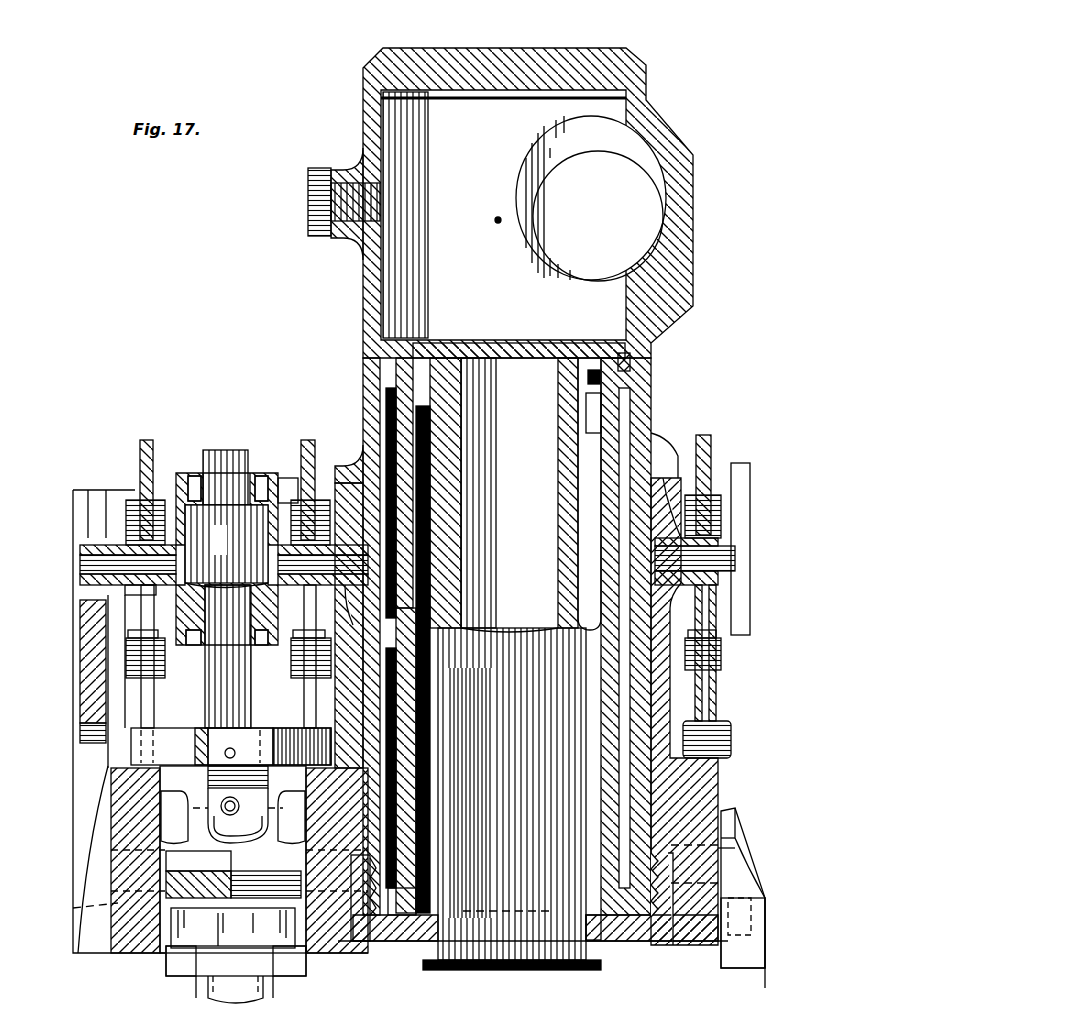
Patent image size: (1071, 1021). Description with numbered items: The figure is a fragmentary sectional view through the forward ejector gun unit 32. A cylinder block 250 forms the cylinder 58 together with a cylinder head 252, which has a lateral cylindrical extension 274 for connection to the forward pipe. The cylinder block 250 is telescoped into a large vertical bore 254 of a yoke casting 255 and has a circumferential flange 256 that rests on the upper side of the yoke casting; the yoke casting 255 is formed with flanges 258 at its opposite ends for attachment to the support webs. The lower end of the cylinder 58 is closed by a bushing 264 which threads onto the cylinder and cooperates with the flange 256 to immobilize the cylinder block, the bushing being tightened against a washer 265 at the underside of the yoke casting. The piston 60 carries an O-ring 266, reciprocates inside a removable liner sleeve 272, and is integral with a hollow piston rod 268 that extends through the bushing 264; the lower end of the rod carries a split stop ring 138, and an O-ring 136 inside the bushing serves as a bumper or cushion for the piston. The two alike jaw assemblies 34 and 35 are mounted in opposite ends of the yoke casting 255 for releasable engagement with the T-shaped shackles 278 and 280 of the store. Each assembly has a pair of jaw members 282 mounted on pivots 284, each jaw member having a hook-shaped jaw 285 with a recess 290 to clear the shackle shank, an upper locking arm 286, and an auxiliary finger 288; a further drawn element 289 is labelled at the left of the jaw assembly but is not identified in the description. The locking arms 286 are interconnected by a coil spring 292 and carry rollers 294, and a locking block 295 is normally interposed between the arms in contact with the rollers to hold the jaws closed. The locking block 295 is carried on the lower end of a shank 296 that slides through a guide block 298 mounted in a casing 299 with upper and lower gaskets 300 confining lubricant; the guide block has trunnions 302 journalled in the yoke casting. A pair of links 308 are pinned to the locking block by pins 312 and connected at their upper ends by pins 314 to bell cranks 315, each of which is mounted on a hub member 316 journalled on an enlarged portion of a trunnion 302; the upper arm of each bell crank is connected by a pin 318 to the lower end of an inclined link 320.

The forward ejector gun unit 32 is at (550, 48).
The forward jaw assembly 34 is at (158, 965).
The forward jaw assembly 35 is at (713, 958).
The cylinder 58 is at (358, 338).
The piston 60 is at (565, 338).
The O-ring 136 is at (595, 935).
The split stop ring 138 is at (560, 950).
The cylinder block 250 is at (352, 306).
The cylinder head 252 is at (432, 60).
The vertical bore 254 is at (650, 777).
The yoke casting 255 is at (334, 938).
The circumferential flange 256 is at (661, 462).
The flange 258 is at (65, 482).
The bushing 264 is at (400, 935).
The washer 265 is at (712, 836).
The O-ring 266 is at (578, 368).
The hollow piston rod 268 is at (498, 948).
The liner sleeve 272 is at (604, 342).
The lateral cylindrical extension 274 is at (655, 174).
The T-shaped shackle 278 is at (240, 975).
The T-shaped shackle 280 is at (757, 971).
The jaw member 282 is at (158, 951).
The pivot 284 is at (715, 872).
The hook-shaped jaw 285 is at (172, 968).
The upper locking arm 286 is at (270, 720).
The auxiliary finger 288 is at (240, 887).
The wall 289 is at (65, 900).
The recess 290 is at (195, 972).
The coil spring 292 is at (225, 808).
The roller 294 is at (248, 768).
The locking block 295 is at (170, 720).
The shank 296 is at (218, 442).
The guide block 298 is at (227, 559).
The casing 299 is at (278, 468).
The gasket 300 is at (252, 465).
The trunnion 302 is at (72, 556).
The link 308 is at (133, 684).
The pin 312 is at (143, 725).
The pin 314 is at (118, 648).
The bell crank 315 is at (125, 626).
The hub member 316 is at (130, 588).
The pin 318 is at (116, 512).
The inclined link 320 is at (134, 435).